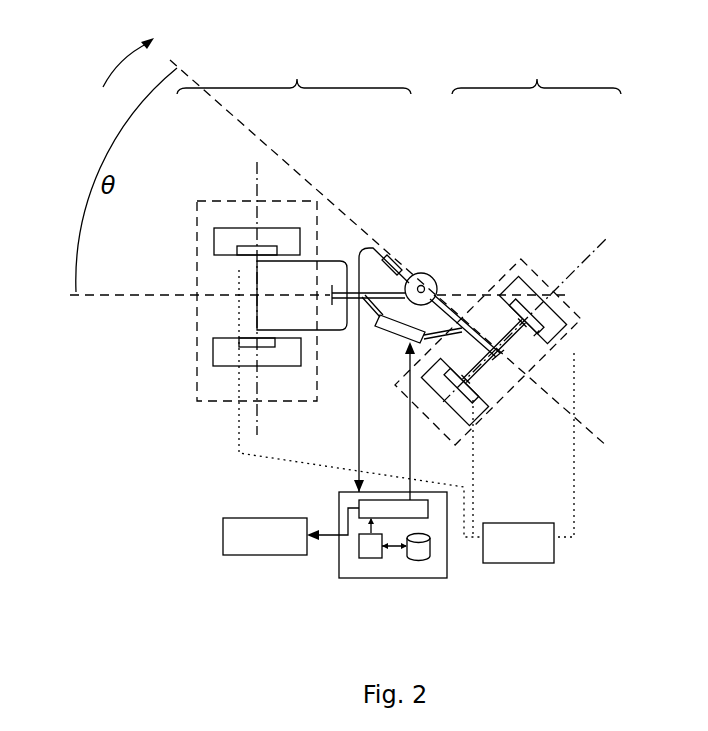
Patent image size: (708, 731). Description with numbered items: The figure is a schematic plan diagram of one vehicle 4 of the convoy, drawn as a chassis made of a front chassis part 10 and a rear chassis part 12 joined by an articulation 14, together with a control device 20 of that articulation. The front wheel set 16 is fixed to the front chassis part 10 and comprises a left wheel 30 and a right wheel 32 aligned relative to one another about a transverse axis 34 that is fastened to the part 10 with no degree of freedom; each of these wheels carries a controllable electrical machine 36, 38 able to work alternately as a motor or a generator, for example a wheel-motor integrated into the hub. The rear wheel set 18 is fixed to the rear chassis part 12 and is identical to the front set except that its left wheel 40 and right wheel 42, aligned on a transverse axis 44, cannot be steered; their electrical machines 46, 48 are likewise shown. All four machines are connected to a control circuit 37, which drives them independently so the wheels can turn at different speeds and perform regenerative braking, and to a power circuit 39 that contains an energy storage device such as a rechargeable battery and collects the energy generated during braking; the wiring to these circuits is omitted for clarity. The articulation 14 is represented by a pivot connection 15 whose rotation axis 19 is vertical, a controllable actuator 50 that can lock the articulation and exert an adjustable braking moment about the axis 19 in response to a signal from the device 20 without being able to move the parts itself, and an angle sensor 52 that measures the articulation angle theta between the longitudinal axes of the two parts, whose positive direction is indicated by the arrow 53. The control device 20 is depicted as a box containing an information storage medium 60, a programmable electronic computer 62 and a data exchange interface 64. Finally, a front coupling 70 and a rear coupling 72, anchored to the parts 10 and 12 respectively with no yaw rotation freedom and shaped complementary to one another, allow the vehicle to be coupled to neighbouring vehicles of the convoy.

The vehicle 4 is at (623, 433).
The front chassis part 10 is at (294, 66).
The rear chassis part 12 is at (536, 68).
The articulation 14 is at (468, 284).
The pivot connection 15 is at (421, 284).
The front wheel set 16 is at (213, 195).
The rear wheel set 18 is at (582, 304).
The rotation axis 19 is at (438, 284).
The control device 20 is at (454, 585).
The left wheel 30 is at (272, 370).
The right wheel 32 is at (272, 228).
The transverse axis 34 is at (250, 308).
The electrical machine 36 is at (240, 345).
The control circuit 37 is at (265, 536).
The electrical machine 38 is at (240, 249).
The power circuit 39 is at (518, 543).
The left wheel 40 is at (478, 418).
The right wheel 42 is at (573, 335).
The transverse axis 44 is at (585, 250).
The electrical machine 46 is at (472, 382).
The electrical machine 48 is at (528, 330).
The controllable actuator 50 is at (393, 342).
The angle sensor 52 is at (393, 258).
The arrow 53 is at (127, 58).
The information storage medium 60 is at (418, 560).
The programmable electronic computer 62 is at (373, 557).
The data exchange interface 64 is at (432, 522).
The front coupling 70 is at (357, 255).
The rear coupling 72 is at (502, 350).